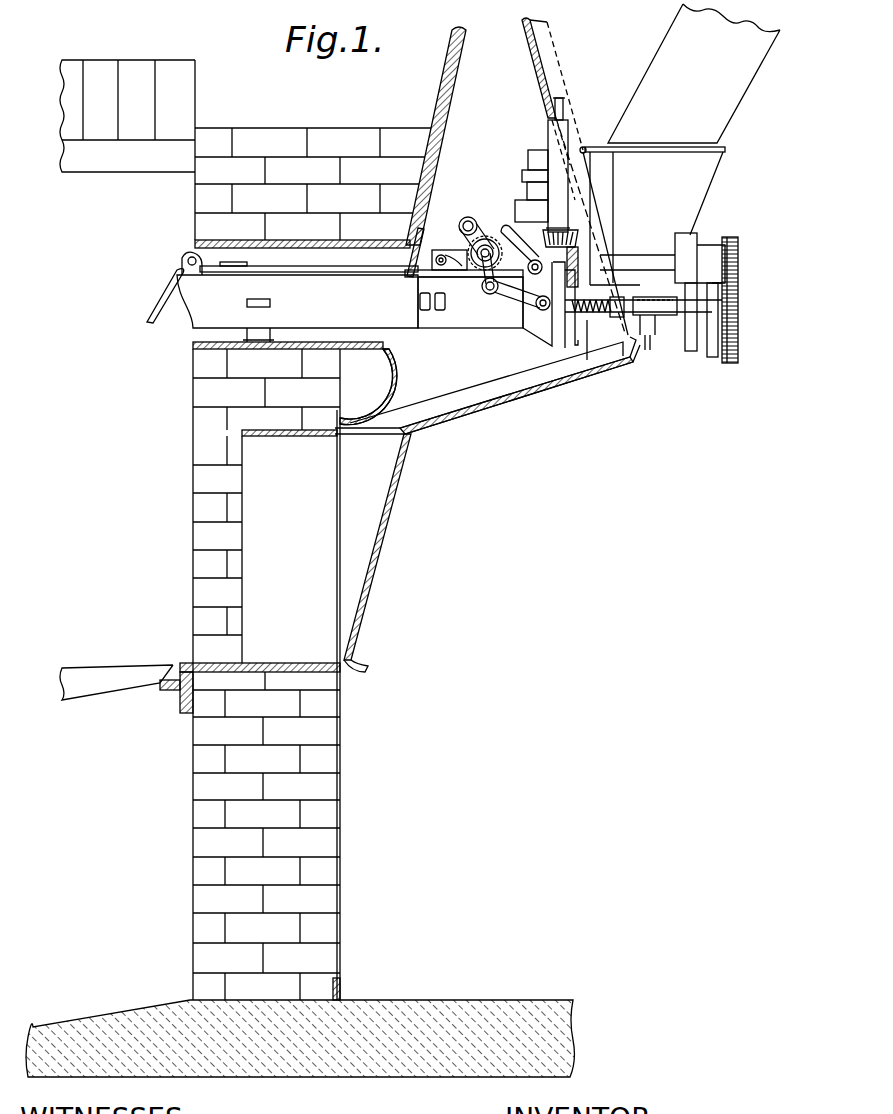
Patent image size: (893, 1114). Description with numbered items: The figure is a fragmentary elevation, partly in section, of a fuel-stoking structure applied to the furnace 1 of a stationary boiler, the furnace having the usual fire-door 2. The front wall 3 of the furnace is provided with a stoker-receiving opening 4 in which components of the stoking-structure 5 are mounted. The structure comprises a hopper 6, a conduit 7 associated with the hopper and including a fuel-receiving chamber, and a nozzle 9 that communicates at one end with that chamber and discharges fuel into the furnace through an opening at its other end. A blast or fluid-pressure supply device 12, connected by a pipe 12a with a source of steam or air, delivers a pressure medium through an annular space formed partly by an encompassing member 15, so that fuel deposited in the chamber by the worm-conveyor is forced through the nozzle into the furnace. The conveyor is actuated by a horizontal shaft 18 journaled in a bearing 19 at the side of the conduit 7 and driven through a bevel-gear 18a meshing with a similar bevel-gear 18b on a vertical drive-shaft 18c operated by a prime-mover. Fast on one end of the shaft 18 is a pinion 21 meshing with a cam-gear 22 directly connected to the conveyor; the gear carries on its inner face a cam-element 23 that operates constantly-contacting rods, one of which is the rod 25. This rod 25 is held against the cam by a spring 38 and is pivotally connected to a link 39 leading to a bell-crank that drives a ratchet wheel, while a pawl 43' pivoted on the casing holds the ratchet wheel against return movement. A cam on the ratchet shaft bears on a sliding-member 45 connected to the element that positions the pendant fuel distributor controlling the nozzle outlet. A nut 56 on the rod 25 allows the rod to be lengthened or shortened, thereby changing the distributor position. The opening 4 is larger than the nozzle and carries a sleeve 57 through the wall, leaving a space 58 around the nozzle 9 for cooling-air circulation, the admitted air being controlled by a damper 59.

The furnace 1 is at (160, 543).
The fire-door 2 is at (378, 535).
The front wall 3 is at (193, 355).
The stoker-receiving opening 4 is at (196, 330).
The stoking-structure 5 is at (535, 176).
The hopper 6 is at (710, 186).
The conduit 7 is at (672, 305).
The nozzle 9 is at (377, 282).
The blast or fluid-pressure supply device 12 is at (525, 190).
The pipe 12a is at (540, 152).
The encompassing member 15 is at (540, 333).
The horizontal shaft 18 is at (638, 263).
The bevel-gear 18a is at (580, 258).
The bevel-gear 18b is at (572, 237).
The vertical drive-shaft 18c is at (553, 108).
The bearing 19 is at (688, 243).
The pinion 21 is at (740, 260).
The cam-gear 22 is at (738, 310).
The cam-element 23 is at (712, 345).
The rod 25 is at (617, 345).
The spring 38 is at (587, 332).
The link 39 is at (510, 298).
The pawl 43' is at (500, 234).
The sliding-member 45 is at (448, 265).
The nut 56 is at (645, 330).
The sleeve 57 is at (215, 240).
The space 58 is at (300, 262).
The damper 59 is at (443, 249).